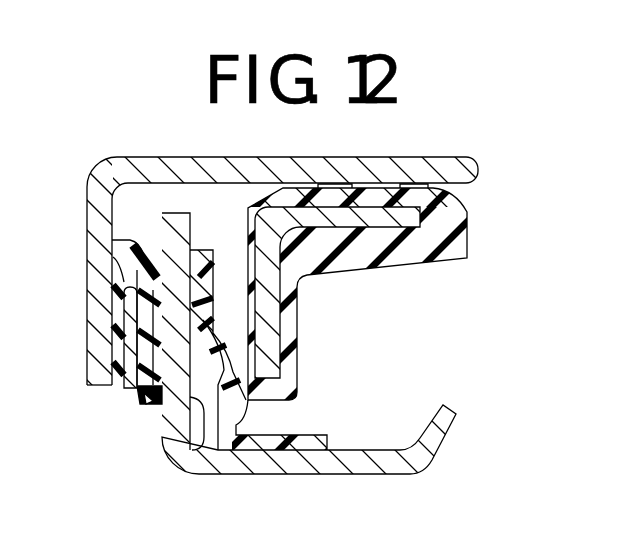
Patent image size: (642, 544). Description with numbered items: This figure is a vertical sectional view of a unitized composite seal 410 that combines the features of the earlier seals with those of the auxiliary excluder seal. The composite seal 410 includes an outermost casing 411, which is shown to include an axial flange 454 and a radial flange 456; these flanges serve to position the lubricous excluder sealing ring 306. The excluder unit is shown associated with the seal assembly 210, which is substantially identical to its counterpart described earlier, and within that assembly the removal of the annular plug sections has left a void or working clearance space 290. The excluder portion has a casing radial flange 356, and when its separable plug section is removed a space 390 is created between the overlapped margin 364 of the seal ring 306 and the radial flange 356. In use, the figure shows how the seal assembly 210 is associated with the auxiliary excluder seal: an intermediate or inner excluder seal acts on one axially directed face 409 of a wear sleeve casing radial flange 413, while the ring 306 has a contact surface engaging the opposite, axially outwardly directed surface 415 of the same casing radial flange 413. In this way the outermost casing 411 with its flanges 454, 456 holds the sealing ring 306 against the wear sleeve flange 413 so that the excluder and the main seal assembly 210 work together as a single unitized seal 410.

The composite seal 410 is at (185, 148).
The outermost casing 411 is at (330, 153).
The axial flange 454 is at (275, 172).
The radial flange 456 is at (98, 230).
The radial flange 356 is at (100, 357).
The lubricous excluder sealing ring 306 is at (141, 247).
The axially outwardly directed surface 415 is at (152, 240).
The space 390 is at (133, 378).
The overlapped margin 364 is at (143, 405).
The wear sleeve casing radial flange 413 is at (173, 422).
The axially directed face 409 is at (203, 462).
The working clearance space 290 is at (227, 303).
The seal assembly 210 is at (310, 343).